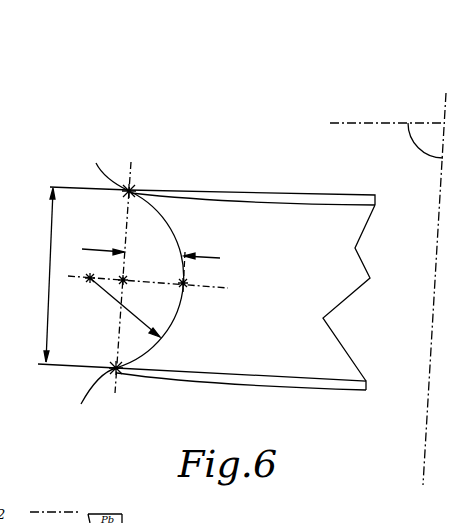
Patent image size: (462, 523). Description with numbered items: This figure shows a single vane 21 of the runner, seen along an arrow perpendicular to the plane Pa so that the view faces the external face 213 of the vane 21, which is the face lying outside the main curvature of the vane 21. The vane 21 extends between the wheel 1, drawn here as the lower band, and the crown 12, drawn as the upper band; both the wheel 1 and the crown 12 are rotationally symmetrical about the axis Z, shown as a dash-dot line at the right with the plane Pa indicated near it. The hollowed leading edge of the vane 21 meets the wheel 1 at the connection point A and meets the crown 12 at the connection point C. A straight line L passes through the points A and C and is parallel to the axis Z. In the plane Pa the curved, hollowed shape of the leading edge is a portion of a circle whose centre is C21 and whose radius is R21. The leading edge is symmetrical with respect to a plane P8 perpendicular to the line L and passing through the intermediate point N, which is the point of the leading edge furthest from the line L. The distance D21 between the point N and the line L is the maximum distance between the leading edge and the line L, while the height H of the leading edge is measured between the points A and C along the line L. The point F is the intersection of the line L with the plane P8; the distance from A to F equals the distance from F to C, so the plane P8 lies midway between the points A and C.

The wheel 1 is at (298, 388).
The crown 12 is at (252, 200).
The vane 21 is at (292, 291).
The external face 213 is at (202, 283).
The centre of the leading edge C21 is at (80, 272).
The radius of the leading edge R21 is at (125, 308).
The distance between point N and straight line L D21 is at (151, 252).
The height of the leading edge H is at (78, 277).
The straight line L is at (128, 274).
The connection point of the wheel with the leading edge A is at (99, 391).
The connection point of the crown with the leading edge C is at (97, 155).
The point of intersection between straight line L and plane P8 F is at (126, 284).
The intermediate point on the leading edge N is at (186, 287).
The plane of symmetry P8 is at (157, 284).
The axis Z is at (390, 281).
The plane Pa is at (425, 140).